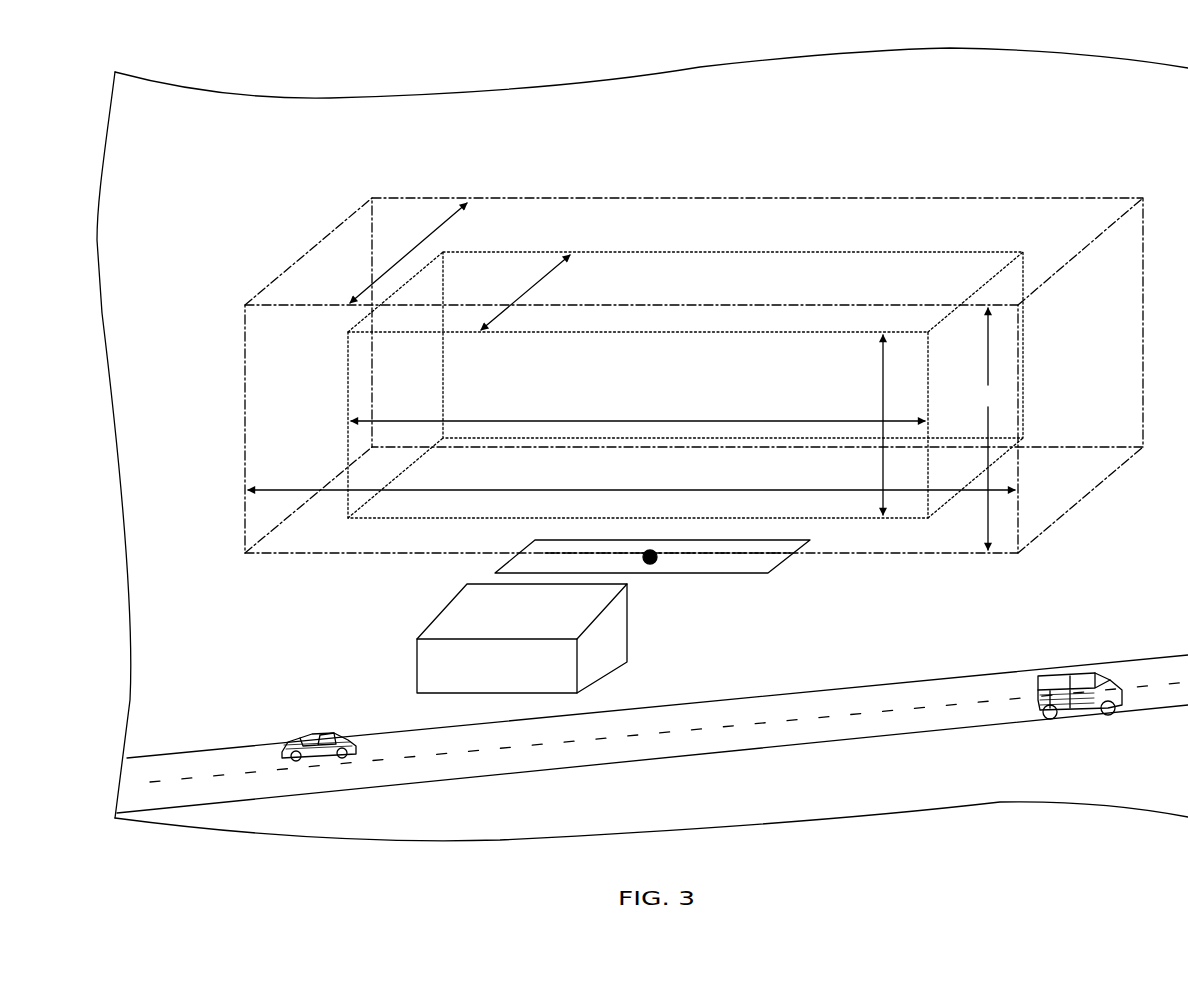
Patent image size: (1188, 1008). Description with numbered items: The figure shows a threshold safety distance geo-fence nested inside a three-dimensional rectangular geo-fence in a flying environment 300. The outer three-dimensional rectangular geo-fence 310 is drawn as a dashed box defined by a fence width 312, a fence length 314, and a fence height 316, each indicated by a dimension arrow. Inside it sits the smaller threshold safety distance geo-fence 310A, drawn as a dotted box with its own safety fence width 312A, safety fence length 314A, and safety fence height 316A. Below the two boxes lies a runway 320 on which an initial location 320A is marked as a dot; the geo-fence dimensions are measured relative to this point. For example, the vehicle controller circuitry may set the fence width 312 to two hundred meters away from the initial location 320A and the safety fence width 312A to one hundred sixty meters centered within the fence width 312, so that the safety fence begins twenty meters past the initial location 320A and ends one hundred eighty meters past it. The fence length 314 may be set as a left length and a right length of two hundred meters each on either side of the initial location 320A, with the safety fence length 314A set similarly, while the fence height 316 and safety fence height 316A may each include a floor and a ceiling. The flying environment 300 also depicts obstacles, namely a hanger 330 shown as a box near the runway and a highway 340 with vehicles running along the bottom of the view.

The flying environment 300 is at (848, 147).
The three-dimensional rectangular geo-fence 310 is at (318, 247).
The threshold safety distance geo-fence 310A is at (348, 375).
The fence width 312 is at (390, 267).
The safety fence width 312A is at (528, 293).
The fence length 314 is at (553, 488).
The safety fence length 314A is at (562, 417).
The fence height 316 is at (988, 363).
The safety fence height 316A is at (873, 388).
The runway 320 is at (648, 546).
The initial location 320A is at (655, 565).
The hanger 330 is at (510, 627).
The highway 340 is at (507, 746).